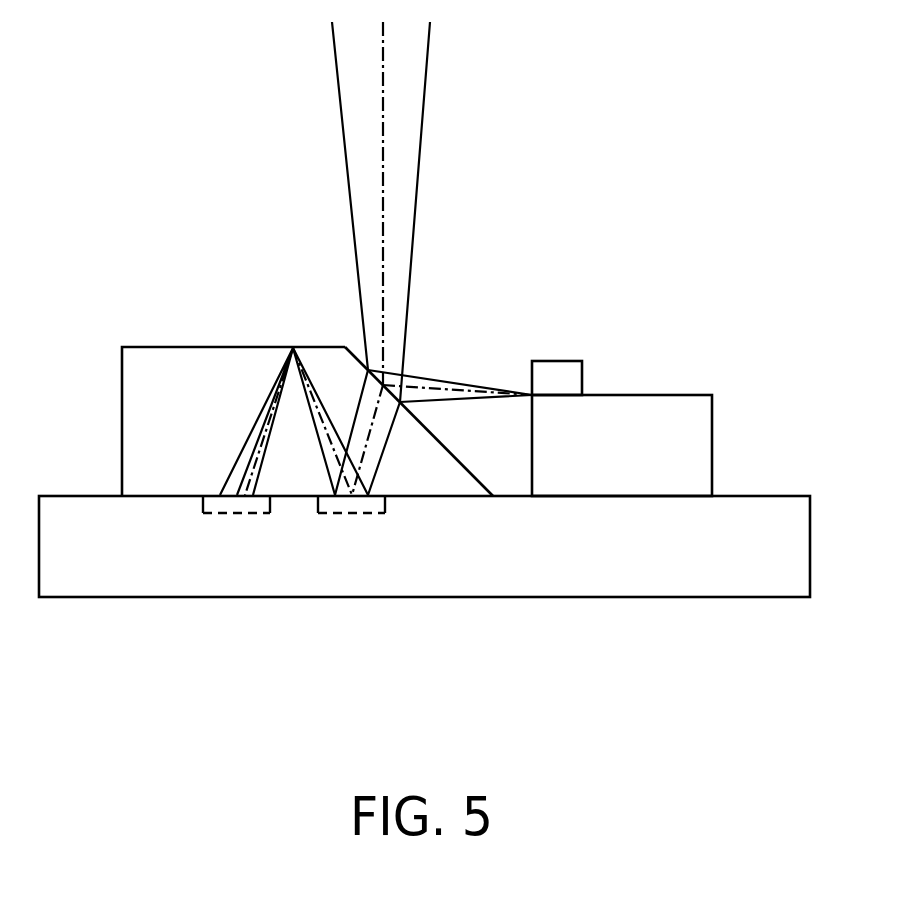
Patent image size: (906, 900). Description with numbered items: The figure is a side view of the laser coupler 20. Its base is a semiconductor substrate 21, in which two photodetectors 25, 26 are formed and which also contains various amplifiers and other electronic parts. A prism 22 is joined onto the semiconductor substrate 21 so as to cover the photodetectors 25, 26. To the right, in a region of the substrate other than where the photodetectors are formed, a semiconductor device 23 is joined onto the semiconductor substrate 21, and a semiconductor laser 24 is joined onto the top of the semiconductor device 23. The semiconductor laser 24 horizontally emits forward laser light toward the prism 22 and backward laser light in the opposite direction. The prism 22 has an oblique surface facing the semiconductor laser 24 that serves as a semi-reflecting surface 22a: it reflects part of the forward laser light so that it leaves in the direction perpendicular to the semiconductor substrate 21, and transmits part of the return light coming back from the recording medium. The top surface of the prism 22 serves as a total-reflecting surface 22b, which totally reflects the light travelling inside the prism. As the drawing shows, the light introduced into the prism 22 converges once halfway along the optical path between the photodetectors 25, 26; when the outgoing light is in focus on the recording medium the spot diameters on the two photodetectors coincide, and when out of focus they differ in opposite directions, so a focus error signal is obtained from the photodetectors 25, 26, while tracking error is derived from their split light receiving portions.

The laser coupler 20 is at (490, 258).
The semiconductor substrate 21 is at (554, 578).
The prism 22 is at (172, 362).
The semi-reflecting surface 22a is at (453, 454).
The total-reflecting surface 22b is at (315, 347).
The semiconductor device 23 is at (682, 395).
The semiconductor laser 24 is at (557, 361).
The photodetector 25 is at (347, 518).
The photodetector 26 is at (230, 518).